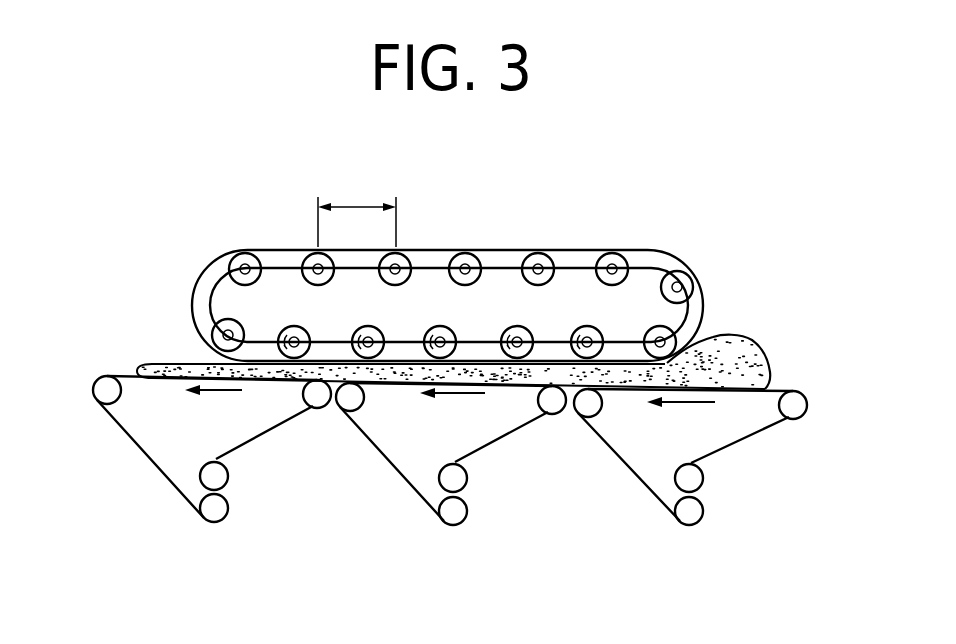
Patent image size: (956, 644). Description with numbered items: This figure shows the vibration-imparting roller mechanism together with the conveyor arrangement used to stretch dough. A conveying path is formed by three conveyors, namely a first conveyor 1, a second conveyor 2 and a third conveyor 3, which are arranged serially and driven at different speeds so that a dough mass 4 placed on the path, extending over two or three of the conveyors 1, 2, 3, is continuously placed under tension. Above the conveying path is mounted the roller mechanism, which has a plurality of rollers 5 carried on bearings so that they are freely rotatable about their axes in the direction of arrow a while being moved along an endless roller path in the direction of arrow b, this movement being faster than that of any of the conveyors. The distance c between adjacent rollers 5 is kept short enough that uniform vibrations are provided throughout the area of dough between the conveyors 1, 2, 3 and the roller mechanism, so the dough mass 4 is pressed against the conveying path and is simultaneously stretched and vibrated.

The first conveyor 1 is at (745, 442).
The second conveyor 2 is at (503, 438).
The third conveyor 3 is at (268, 437).
The dough mass 4 is at (760, 348).
The rollers 5 is at (447, 269).
The arrow a is at (428, 336).
The arrow b is at (318, 338).
The distance c is at (357, 212).